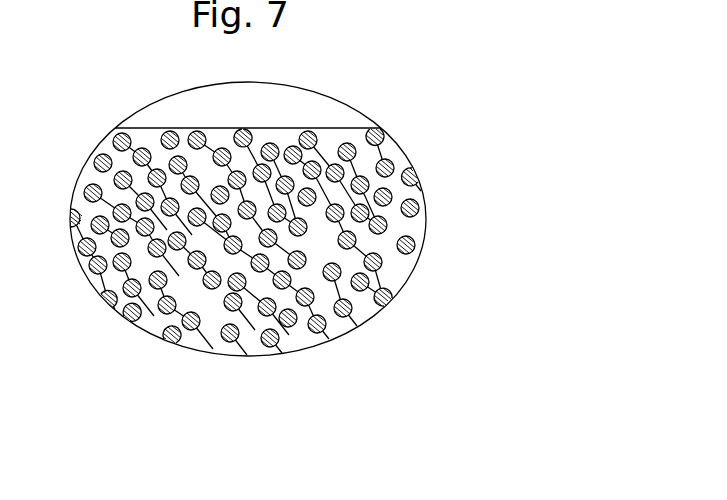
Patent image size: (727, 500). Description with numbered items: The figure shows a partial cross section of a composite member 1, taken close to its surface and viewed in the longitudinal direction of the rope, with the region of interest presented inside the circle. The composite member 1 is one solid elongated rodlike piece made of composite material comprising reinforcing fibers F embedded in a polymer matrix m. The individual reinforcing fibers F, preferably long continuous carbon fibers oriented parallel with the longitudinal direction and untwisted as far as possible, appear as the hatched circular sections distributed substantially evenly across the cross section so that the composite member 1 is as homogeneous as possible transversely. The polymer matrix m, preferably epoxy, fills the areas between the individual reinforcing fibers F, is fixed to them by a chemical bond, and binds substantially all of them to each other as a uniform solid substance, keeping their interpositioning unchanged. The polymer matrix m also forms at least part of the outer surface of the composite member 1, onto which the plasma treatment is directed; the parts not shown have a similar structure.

The composite member 1 is at (419, 147).
The reinforcing fibers F is at (422, 216).
The polymer matrix m is at (385, 250).